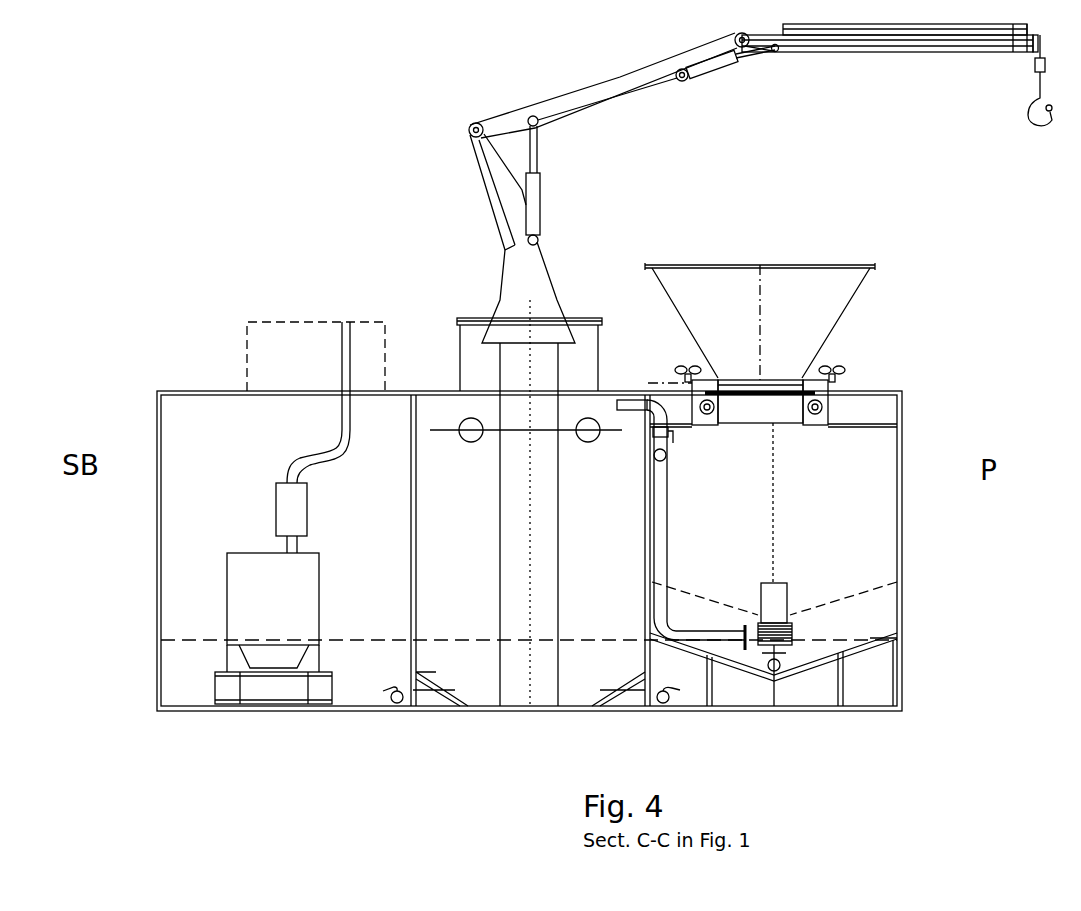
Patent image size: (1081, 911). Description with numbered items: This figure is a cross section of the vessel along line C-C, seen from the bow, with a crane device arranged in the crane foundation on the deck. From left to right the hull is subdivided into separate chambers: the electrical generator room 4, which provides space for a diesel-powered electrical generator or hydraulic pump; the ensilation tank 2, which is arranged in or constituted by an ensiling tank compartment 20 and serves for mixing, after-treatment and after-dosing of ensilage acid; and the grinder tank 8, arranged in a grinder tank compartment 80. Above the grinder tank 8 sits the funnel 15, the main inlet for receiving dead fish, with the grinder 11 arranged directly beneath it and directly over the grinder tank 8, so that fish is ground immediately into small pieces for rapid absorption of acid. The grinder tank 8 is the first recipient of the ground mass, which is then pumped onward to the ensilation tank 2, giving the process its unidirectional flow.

The electrical generator room 4 is at (300, 513).
The ensilation tank 2 is at (538, 474).
The ensiling tank compartment 20 is at (538, 474).
The grinder tank 8 is at (772, 553).
The grinder tank compartment 80 is at (772, 553).
The funnel 15 is at (760, 321).
The grinder 11 is at (746, 395).